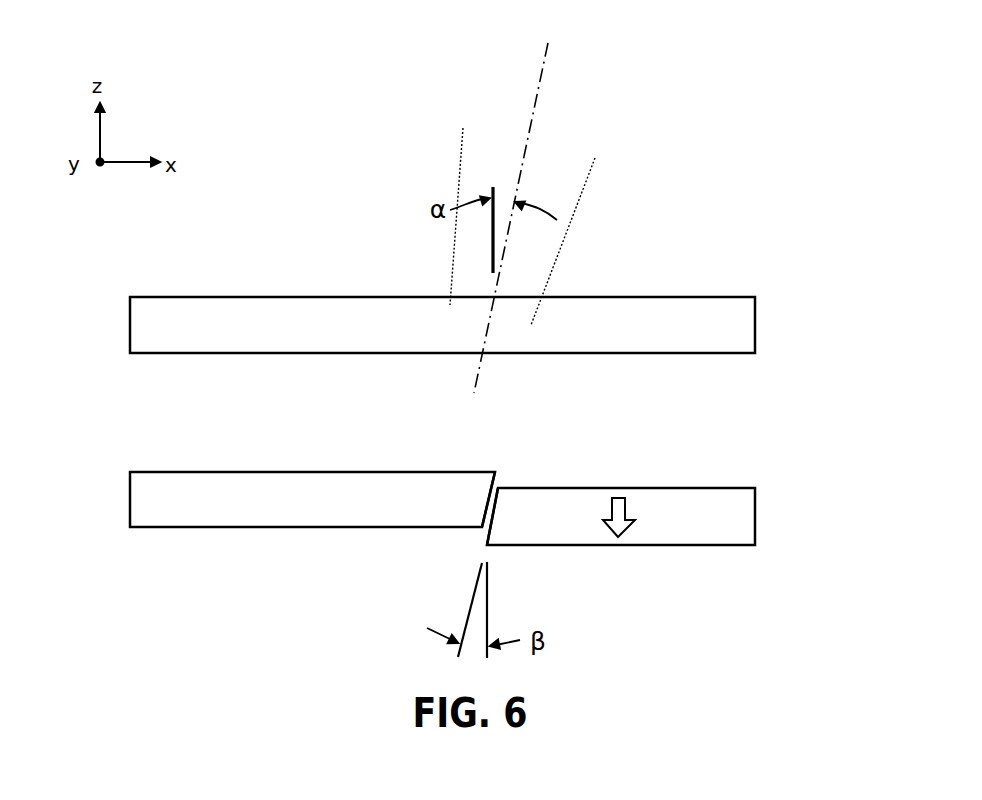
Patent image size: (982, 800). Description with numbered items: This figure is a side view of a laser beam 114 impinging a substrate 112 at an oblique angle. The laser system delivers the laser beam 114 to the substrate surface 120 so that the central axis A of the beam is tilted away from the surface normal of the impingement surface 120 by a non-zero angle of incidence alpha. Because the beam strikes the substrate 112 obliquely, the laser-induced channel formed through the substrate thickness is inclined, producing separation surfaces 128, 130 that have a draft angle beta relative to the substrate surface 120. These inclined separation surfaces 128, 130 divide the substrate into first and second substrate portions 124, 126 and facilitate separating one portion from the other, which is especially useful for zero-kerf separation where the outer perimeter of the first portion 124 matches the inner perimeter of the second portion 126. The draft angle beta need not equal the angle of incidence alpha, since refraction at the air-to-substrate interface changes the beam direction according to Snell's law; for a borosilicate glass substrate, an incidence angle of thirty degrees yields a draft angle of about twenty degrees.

The substrate 112 is at (488, 275).
The laser beam 114 is at (463, 148).
The substrate surface 120 is at (695, 297).
The first substrate portion 124 is at (317, 353).
The second substrate portion 126 is at (687, 353).
The separation surface 128 is at (497, 478).
The separation surface 130 is at (483, 533).
The central axis of the laser beam A is at (542, 80).